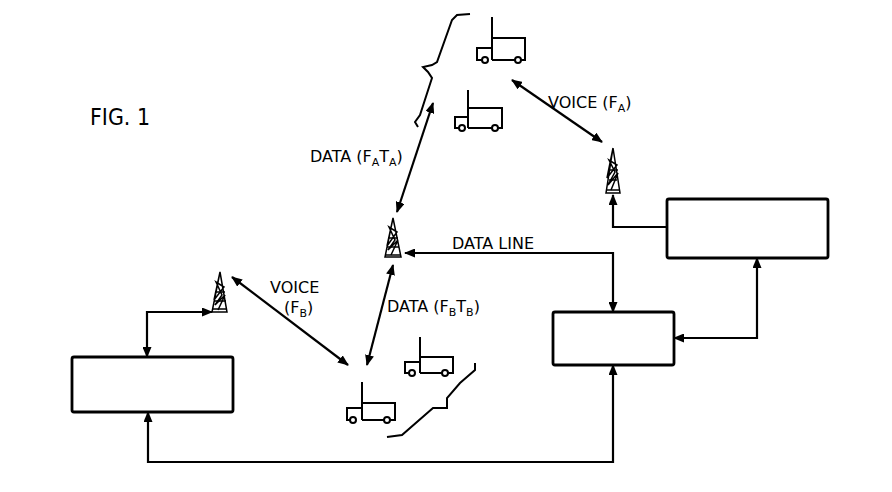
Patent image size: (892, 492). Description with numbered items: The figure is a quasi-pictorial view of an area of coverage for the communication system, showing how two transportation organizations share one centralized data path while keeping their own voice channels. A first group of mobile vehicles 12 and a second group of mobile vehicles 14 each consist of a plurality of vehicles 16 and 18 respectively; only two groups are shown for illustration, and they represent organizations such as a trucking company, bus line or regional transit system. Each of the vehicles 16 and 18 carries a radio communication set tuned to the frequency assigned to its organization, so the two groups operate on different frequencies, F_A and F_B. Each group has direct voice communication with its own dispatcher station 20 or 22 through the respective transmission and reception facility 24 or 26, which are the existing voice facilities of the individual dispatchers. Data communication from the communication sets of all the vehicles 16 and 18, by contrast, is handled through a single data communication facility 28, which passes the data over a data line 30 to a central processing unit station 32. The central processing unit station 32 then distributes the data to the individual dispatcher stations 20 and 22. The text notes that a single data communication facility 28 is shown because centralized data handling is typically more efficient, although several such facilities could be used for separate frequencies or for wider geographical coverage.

The first group of mobile vehicles 12 is at (437, 70).
The second group of mobile vehicles 14 is at (431, 400).
The vehicles 16 is at (522, 121).
The vehicles 18 is at (462, 343).
The dispatcher station 20 is at (770, 199).
The dispatcher station 22 is at (195, 357).
The transmission and reception facility 24 is at (604, 180).
The transmission and reception facility 26 is at (210, 292).
The data communication facility 28 is at (386, 241).
The data line 30 is at (513, 254).
The central processing unit station 32 is at (640, 312).